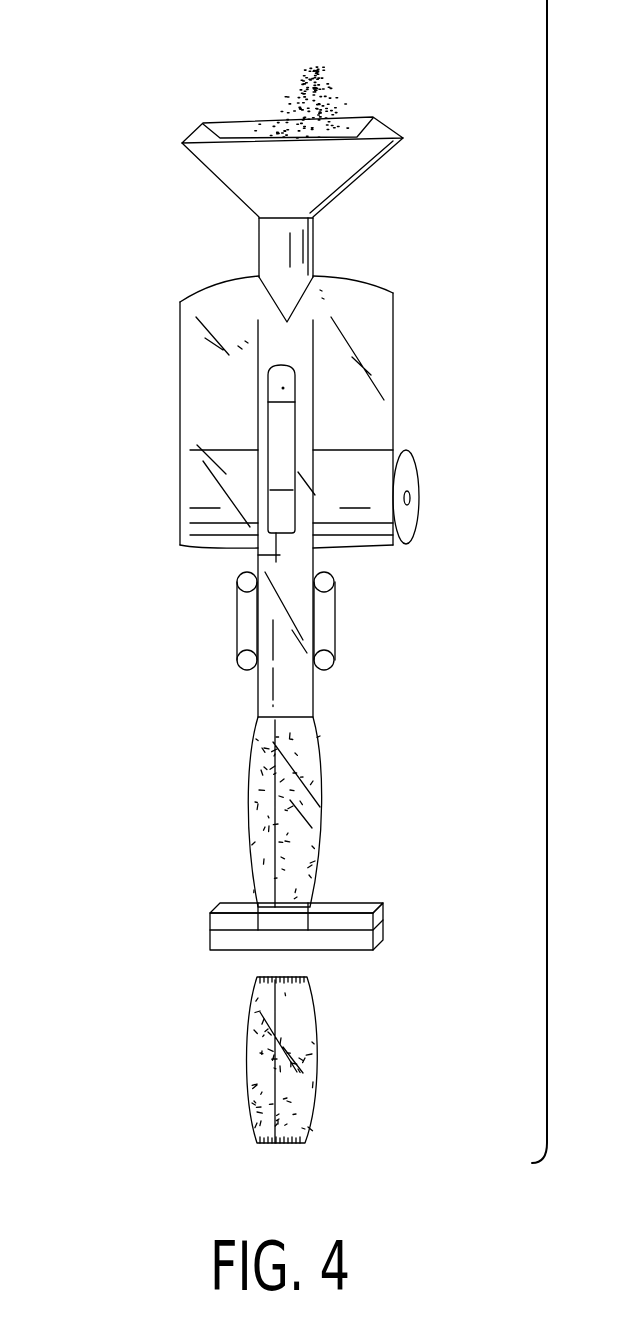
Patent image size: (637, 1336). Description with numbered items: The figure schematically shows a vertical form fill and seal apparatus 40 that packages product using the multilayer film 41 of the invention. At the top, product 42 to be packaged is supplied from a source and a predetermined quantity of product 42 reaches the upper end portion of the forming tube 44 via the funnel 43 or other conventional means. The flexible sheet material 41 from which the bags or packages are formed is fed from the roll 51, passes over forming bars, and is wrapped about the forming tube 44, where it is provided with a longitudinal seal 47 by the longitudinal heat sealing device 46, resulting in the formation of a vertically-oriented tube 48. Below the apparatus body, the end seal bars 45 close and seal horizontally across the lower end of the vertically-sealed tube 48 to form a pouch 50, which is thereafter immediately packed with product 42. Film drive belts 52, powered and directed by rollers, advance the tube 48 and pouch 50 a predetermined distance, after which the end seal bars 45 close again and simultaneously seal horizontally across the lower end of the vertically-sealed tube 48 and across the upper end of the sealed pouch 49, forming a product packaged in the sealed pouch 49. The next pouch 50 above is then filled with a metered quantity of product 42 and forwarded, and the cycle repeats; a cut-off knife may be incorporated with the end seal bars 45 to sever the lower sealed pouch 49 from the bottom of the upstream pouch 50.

The vertical form fill and seal apparatus 40 is at (122, 349).
The multilayer film 41 is at (382, 347).
The product 42 is at (342, 80).
The funnel 43 is at (347, 180).
The forming tube 44 is at (300, 253).
The end seal bars 45 is at (340, 915).
The longitudinal heat sealing device 46 is at (288, 430).
The longitudinal seal 47 is at (317, 553).
The vertically-oriented tube 48 is at (250, 560).
The sealed pouch 49 is at (307, 1035).
The pouch 50 is at (307, 842).
The roll 51 is at (413, 470).
The film drive belts 52 is at (237, 622).